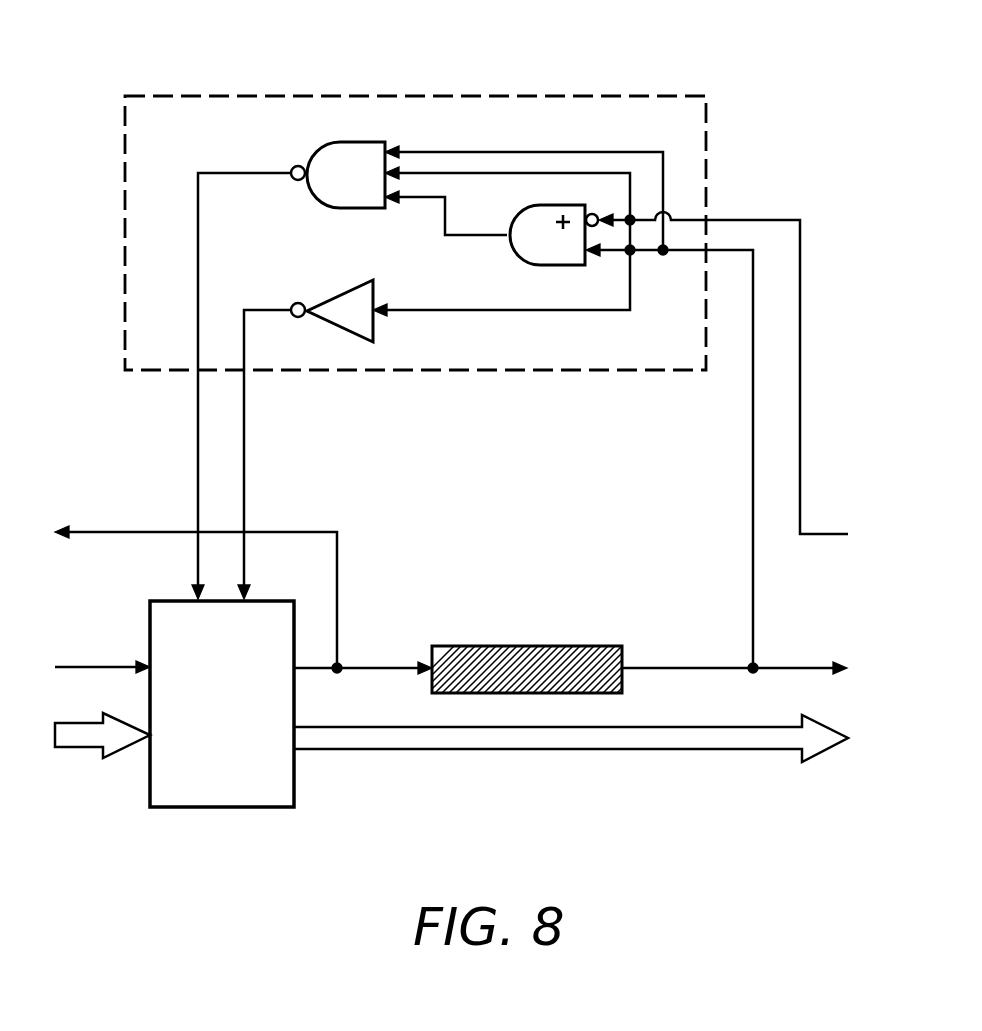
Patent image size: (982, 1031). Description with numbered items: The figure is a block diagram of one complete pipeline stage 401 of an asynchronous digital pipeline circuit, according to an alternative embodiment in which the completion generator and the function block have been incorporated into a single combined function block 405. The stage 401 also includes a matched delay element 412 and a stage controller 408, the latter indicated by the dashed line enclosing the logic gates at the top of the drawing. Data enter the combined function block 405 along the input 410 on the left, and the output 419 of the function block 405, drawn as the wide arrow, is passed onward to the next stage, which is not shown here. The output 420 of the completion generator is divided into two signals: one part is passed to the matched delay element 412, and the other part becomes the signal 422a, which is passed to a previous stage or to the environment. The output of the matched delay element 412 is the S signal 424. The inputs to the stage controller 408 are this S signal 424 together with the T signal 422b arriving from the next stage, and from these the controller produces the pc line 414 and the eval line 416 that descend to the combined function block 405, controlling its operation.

The pipeline stage 401 is at (485, 44).
The stage controller 408 is at (706, 140).
The precharge (pc) signal line 414 is at (198, 413).
The evaluate (eval) signal line 416 is at (244, 418).
The T signal 422b is at (800, 410).
The signal 422a is at (337, 557).
The S signal 424 is at (753, 548).
The input signal 410 is at (120, 663).
The matched delay element 412 is at (476, 646).
The output of the completion generator 420 is at (334, 676).
The output of function block 419 is at (542, 749).
The combined function block 405 is at (220, 807).